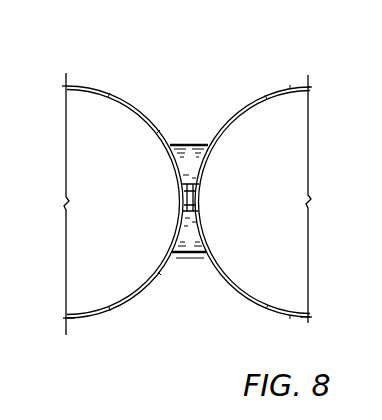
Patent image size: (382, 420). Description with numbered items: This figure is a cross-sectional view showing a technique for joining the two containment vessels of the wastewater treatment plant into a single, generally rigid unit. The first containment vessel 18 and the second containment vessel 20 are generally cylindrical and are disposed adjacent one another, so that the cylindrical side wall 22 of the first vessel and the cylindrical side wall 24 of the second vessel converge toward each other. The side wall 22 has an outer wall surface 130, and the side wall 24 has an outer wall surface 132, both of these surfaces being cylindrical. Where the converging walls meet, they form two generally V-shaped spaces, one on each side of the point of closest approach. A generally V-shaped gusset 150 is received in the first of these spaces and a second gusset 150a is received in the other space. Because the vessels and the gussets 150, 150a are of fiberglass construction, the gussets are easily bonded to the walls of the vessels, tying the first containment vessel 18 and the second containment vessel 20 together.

The first containment vessel 18 is at (113, 72).
The second containment vessel 20 is at (289, 78).
The outer wall surface 130 is at (86, 85).
The outer wall surface 132 is at (263, 94).
The cylindrical side wall 22 is at (80, 320).
The cylindrical side wall 24 is at (270, 318).
The gusset 150a is at (192, 146).
The gusset 150 is at (188, 240).